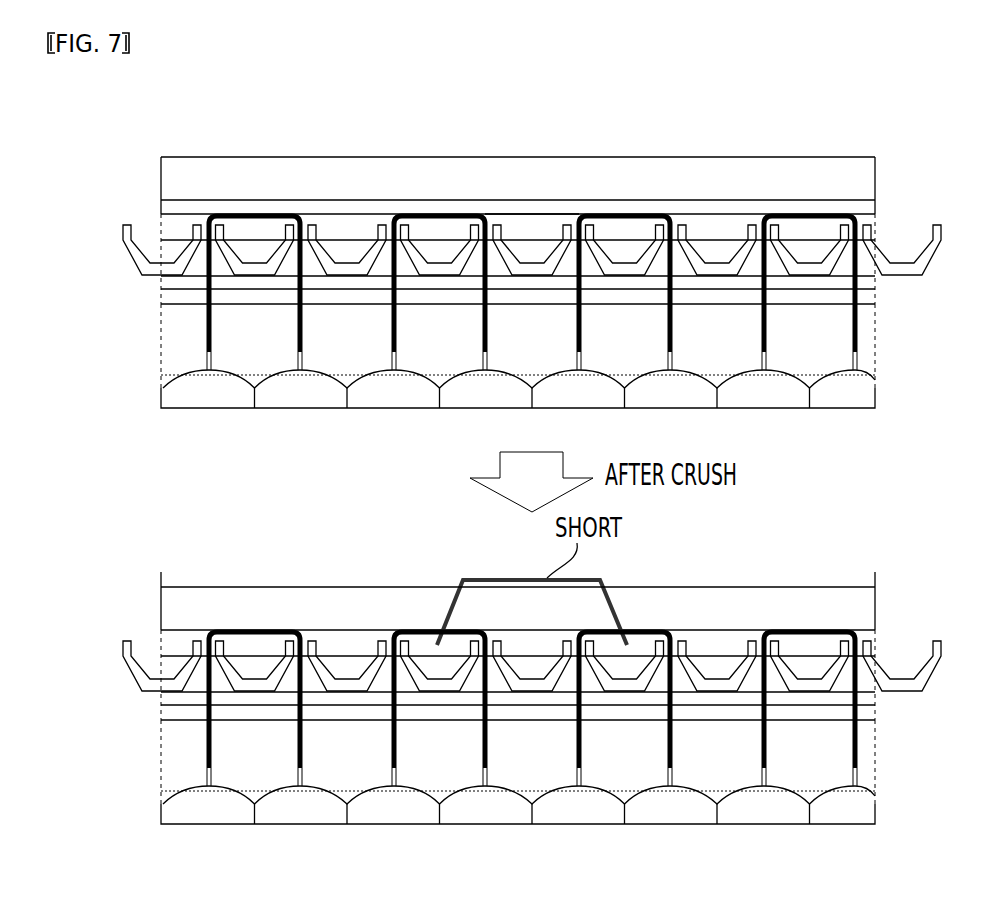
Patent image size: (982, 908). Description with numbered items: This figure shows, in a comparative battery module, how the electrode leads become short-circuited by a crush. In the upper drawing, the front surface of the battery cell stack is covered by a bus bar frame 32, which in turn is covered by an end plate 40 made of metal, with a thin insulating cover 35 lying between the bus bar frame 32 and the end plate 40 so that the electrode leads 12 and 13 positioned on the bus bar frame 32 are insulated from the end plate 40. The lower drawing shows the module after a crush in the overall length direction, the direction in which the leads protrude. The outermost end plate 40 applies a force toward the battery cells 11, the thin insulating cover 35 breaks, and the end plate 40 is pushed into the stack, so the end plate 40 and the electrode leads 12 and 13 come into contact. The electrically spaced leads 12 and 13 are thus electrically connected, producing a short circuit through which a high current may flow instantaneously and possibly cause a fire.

The battery cell 11 is at (765, 393).
The electrode lead 12 is at (435, 215).
The electrode lead 13 is at (620, 213).
The bus bar frame 32 is at (340, 230).
The insulating cover 35 is at (532, 208).
The end plate 40 is at (752, 180).